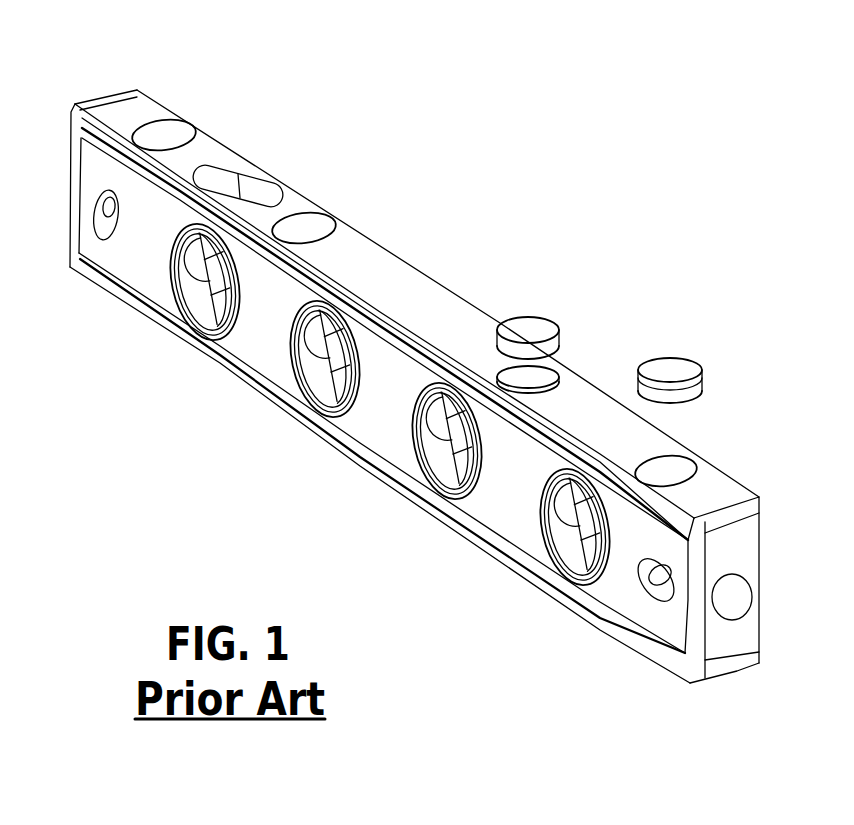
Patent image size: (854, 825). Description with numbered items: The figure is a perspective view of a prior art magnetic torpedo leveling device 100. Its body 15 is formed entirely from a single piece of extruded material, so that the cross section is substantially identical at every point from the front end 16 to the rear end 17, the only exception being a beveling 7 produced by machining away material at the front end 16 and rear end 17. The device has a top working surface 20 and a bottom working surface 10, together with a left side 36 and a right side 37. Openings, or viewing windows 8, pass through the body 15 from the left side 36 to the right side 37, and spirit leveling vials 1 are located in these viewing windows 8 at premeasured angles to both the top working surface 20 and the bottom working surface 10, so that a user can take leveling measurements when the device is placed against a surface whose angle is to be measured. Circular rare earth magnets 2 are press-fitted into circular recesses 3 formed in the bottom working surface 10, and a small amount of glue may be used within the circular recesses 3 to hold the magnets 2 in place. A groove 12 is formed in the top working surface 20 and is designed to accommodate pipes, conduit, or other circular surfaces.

The magnetic torpedo leveling device 100 is at (498, 188).
The bottom working surface 10 is at (415, 300).
The right side 37 is at (411, 250).
The circular rare earth magnets 2 is at (163, 133).
The circular recesses 3 is at (660, 467).
The front end 16 is at (66, 117).
The rear end 17 is at (753, 558).
The beveling 7 is at (88, 214).
The spirit leveling vials 1 is at (178, 326).
The viewing windows 8 is at (200, 340).
The body 15 is at (273, 322).
The top working surface 20 is at (362, 470).
The left side 36 is at (630, 663).
The groove 12 is at (737, 672).